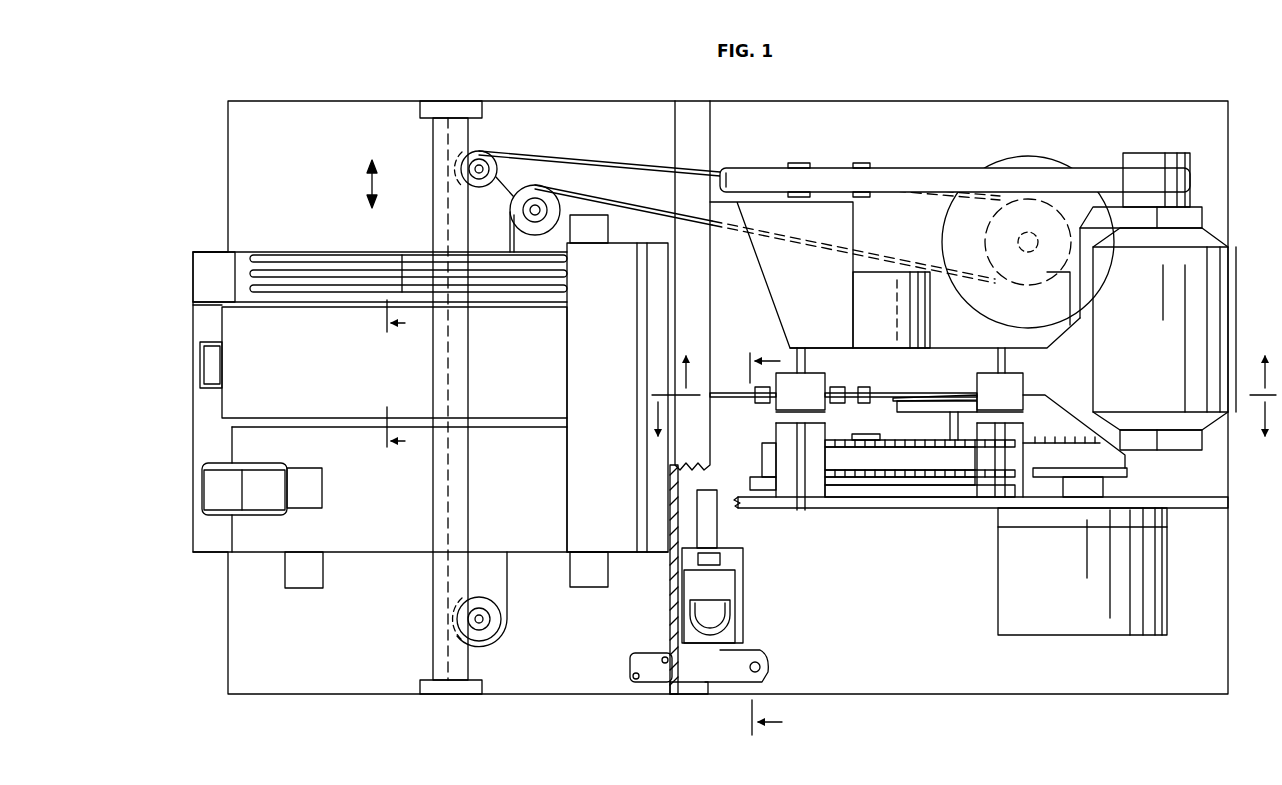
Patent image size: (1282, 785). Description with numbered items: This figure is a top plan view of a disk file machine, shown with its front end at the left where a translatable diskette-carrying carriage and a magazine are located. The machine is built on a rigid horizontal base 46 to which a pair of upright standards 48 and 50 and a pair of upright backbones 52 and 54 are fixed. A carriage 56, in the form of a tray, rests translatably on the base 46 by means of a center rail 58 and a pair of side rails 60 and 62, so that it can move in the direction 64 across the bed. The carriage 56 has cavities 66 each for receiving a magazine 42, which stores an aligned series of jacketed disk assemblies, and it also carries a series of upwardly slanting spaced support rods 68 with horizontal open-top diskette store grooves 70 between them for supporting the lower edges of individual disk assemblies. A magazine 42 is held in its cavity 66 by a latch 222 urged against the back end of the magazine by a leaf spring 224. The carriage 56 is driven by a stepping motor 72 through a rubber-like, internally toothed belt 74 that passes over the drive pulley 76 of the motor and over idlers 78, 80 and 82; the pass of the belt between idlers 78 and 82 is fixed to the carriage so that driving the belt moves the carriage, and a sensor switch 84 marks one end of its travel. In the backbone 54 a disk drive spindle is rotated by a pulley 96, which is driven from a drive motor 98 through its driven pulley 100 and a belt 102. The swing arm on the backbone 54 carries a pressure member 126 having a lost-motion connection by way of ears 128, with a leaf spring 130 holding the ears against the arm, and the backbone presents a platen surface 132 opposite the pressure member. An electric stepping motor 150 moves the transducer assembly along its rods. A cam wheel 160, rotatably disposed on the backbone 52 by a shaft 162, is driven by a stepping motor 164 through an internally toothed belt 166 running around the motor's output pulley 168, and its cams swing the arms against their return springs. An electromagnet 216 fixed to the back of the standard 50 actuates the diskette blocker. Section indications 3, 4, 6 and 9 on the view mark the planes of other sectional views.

The section line 3 is at (964, 362).
The section line 4 is at (962, 434).
The section line 6 is at (758, 543).
The section line 9 is at (405, 376).
The magazine 42 is at (294, 375).
The base 46 is at (918, 694).
The upright standard 48 is at (681, 133).
The upright standard 50 is at (690, 694).
The upright backbone 52 is at (940, 508).
The upright backbone 54 is at (946, 348).
The carriage 56 is at (368, 552).
The center rail 58 is at (433, 643).
The side rail 60 is at (302, 588).
The side rail 62 is at (590, 587).
The direction of carriage movement 64 is at (374, 186).
The cavity 66 is at (534, 558).
The support rod 68 is at (258, 258).
The diskette store groove 70 is at (402, 262).
The motor 72 is at (1020, 158).
The belt 74 is at (641, 160).
The drive pulley 76 is at (986, 230).
The idler 78 is at (498, 172).
The idler 80 is at (515, 205).
The idler 82 is at (485, 600).
The sensor switch 84 is at (648, 653).
The pulley 96 is at (830, 163).
The drive motor 98 is at (1129, 372).
The driven pulley 100 is at (1150, 153).
The belt 102 is at (925, 165).
The pressure member 126 is at (925, 394).
The ear 128 is at (900, 408).
The leaf spring 130 is at (965, 400).
The platen surface 132 is at (875, 390).
The electric motor 150 is at (855, 307).
The cam wheel 160 is at (838, 500).
The shaft 162 is at (880, 500).
The motor 164 is at (1025, 595).
The internally toothed belt 166 is at (1033, 443).
The output pulley 168 is at (1132, 472).
The electromagnet 216 is at (695, 595).
The latch 222 is at (208, 378).
The leaf spring 224 is at (264, 463).